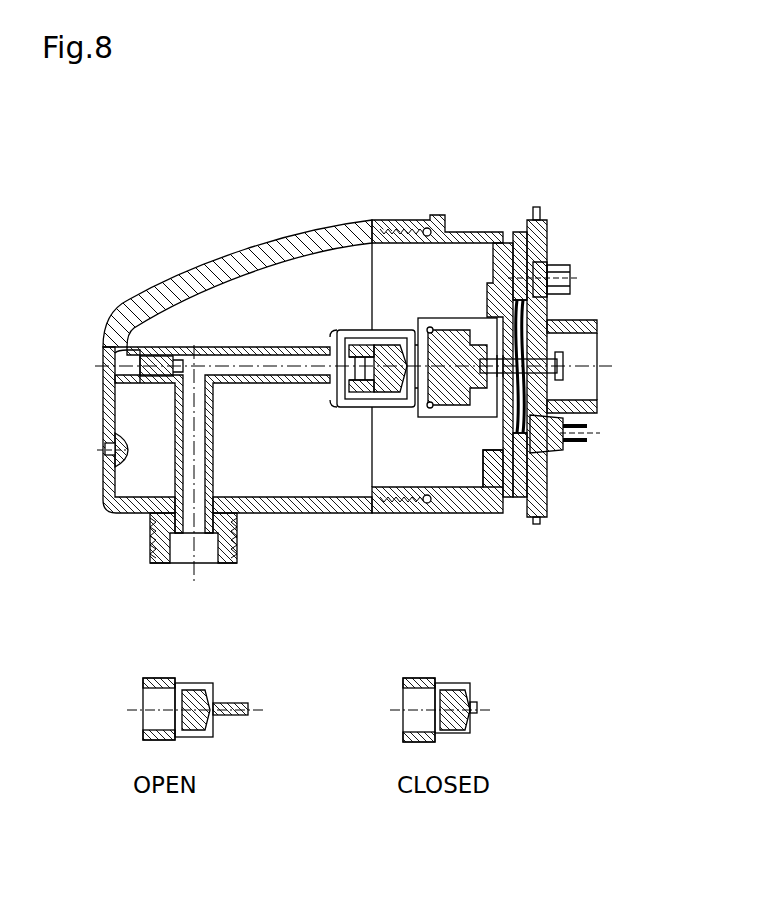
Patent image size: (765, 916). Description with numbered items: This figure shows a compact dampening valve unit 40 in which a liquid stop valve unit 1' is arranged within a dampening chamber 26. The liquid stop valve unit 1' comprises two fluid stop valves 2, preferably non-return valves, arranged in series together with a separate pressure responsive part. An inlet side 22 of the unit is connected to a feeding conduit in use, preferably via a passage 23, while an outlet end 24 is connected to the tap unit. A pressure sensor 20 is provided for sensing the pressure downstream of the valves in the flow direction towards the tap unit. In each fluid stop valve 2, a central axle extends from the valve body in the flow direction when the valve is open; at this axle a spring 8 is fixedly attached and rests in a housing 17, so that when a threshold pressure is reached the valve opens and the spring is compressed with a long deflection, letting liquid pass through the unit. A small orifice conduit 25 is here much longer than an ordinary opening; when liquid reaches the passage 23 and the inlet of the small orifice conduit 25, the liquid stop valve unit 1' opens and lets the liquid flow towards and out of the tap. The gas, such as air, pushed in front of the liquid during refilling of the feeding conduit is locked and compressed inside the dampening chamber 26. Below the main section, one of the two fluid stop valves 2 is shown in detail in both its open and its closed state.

The dampening chamber 26 is at (275, 283).
The inlet side 22 is at (330, 310).
The liquid stop valve unit 1' is at (514, 271).
The outlet end 24 is at (592, 323).
The pressure sensor 20 is at (556, 440).
The housing 17 is at (529, 440).
The spring 8 is at (507, 433).
The fluid stop valve 2 is at (373, 360).
The small orifice conduit 25 is at (193, 448).
The passage 23 is at (180, 547).
The dampening valve unit 40 is at (543, 577).